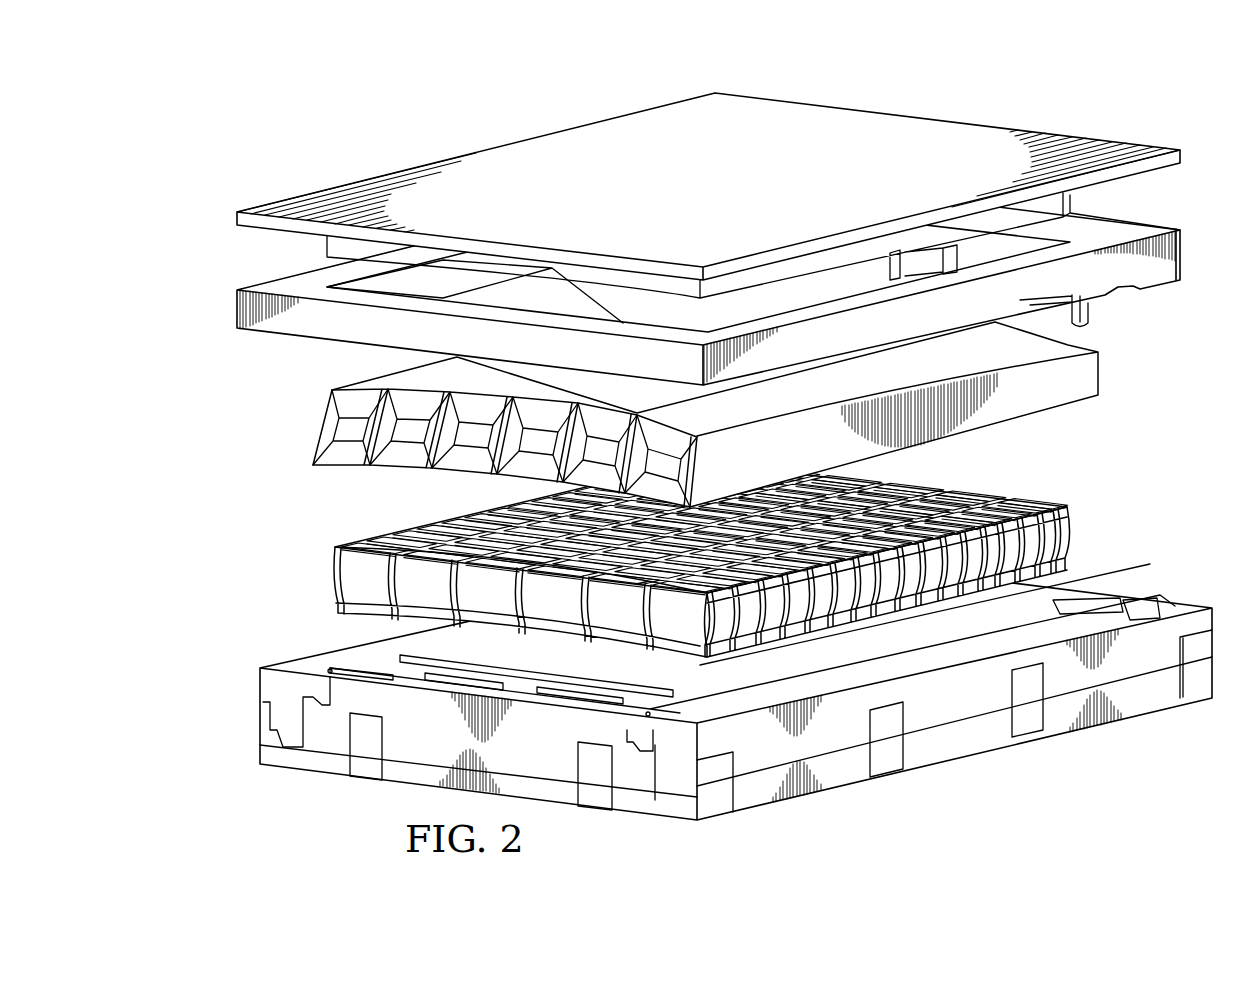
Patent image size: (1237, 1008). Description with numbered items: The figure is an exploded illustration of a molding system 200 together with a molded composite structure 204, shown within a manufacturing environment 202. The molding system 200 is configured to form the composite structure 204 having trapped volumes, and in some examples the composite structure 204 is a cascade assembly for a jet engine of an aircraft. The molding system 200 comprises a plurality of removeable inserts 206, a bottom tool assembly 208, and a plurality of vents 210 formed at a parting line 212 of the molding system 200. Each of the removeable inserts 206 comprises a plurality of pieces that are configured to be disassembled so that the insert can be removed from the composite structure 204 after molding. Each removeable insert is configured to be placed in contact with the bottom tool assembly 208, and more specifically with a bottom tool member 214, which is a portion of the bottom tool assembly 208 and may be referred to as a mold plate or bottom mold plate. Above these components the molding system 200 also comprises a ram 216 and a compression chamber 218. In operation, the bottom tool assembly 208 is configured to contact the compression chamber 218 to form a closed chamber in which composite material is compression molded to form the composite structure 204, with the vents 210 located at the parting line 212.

The molding system 200 is at (426, 145).
The manufacturing environment 202 is at (218, 127).
The composite structure 204 is at (1036, 398).
The plurality of removeable inserts 206 is at (1062, 542).
The bottom tool assembly 208 is at (1157, 700).
The plurality of vents 210 is at (540, 669).
The parting line 212 is at (304, 641).
The bottom tool member 214 is at (857, 660).
The ram 216 is at (978, 138).
The compression chamber 218 is at (1148, 277).